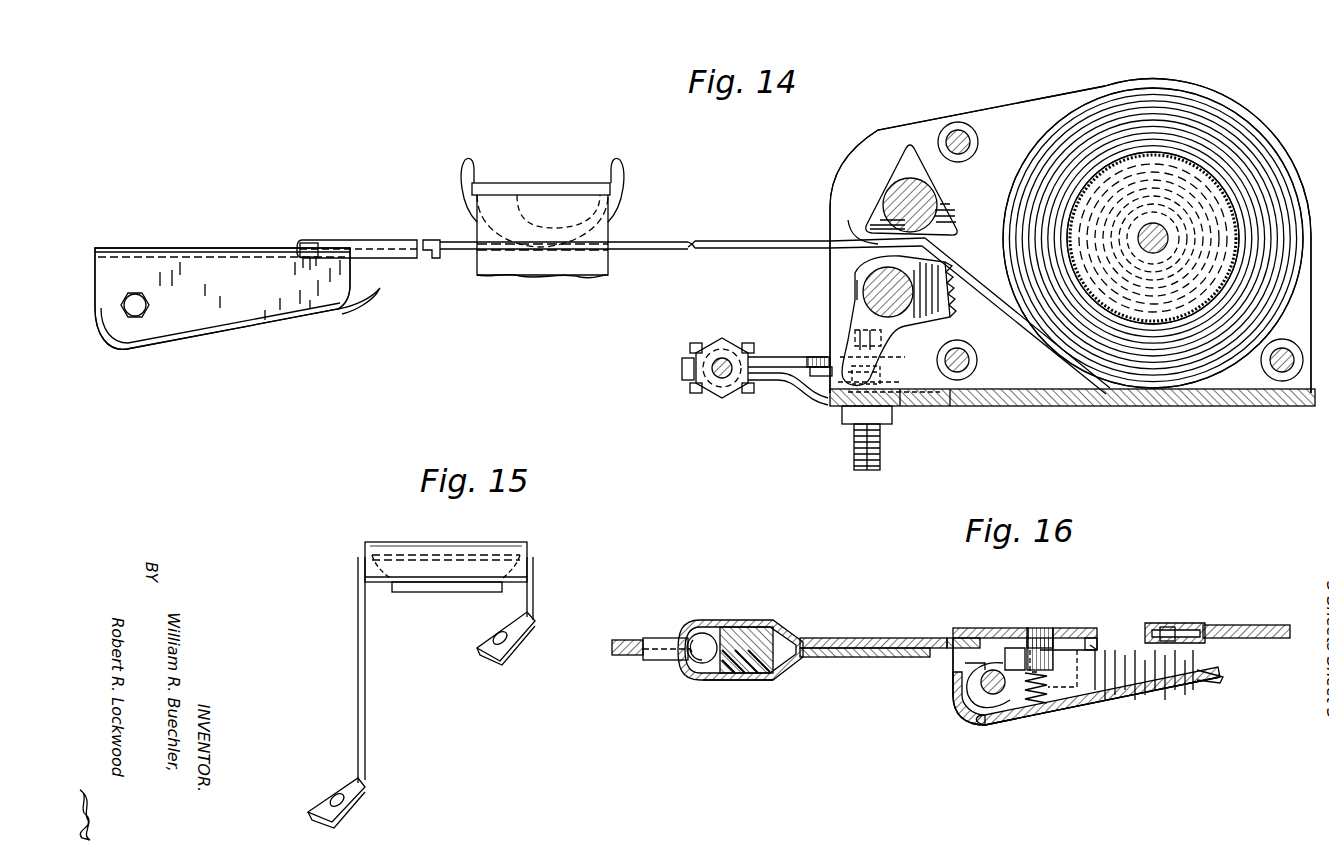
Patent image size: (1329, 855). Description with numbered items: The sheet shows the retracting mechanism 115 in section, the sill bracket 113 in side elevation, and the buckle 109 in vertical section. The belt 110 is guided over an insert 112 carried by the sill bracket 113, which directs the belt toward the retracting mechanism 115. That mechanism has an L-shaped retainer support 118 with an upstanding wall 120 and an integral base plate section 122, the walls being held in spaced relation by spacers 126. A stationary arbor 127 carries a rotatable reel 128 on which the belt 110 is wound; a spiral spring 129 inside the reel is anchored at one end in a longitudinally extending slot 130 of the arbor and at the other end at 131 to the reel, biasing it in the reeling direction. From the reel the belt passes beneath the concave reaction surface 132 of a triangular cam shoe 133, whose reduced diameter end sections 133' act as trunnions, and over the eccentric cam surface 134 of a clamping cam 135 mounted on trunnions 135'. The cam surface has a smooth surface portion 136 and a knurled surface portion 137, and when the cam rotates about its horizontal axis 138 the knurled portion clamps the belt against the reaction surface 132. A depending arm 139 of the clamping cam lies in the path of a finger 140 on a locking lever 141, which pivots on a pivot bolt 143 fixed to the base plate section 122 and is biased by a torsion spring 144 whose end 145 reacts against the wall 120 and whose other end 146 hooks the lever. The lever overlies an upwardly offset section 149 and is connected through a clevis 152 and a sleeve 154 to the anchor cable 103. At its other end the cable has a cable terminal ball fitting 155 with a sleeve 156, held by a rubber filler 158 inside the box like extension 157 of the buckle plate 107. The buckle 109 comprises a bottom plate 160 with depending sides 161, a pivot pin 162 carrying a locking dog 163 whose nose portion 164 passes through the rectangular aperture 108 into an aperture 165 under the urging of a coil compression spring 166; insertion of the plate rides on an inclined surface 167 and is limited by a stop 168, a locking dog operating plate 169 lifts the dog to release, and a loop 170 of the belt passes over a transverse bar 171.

In FIG. 14, the anchor cable 103 is at (721, 380).
In FIG. 16, the anchor cable 103 is at (630, 638).
In FIG. 16, the buckle plate 107 is at (940, 638).
In FIG. 16, the rectangular aperture 108 is at (982, 648).
In FIG. 14, the buckle 109 is at (256, 231).
In FIG. 16, the buckle 109 is at (1156, 604).
In FIG. 14, the belt 110 is at (720, 240).
In FIG. 16, the belt 110 is at (1275, 624).
In FIG. 14, the insert 112 is at (612, 196).
In FIG. 15, the insert 112 is at (518, 550).
In FIG. 14, the sill bracket 113 is at (604, 266).
In FIG. 15, the sill bracket 113 is at (357, 646).
In FIG. 14, the retracting mechanism 115 is at (1250, 57).
In FIG. 14, the retainer support 118 is at (1038, 84).
In FIG. 14, the upstanding wall 120 is at (980, 110).
In FIG. 14, the base plate section 122 is at (1198, 406).
In FIG. 14, the spacers 126 is at (978, 150).
In FIG. 14, the stationary arbor 127 is at (1157, 236).
In FIG. 14, the reel 128 is at (1157, 152).
In FIG. 14, the spiral spring 129 is at (1182, 177).
In FIG. 14, the longitudinally extending slot 130 is at (1123, 237).
In FIG. 14, the anchor point 131 is at (1250, 217).
In FIG. 14, the reaction surface 132 is at (935, 240).
In FIG. 14, the cam shoe 133 is at (928, 190).
In FIG. 14, the reduced diameter end sections 133' is at (891, 195).
In FIG. 14, the eccentric cam surface 134 is at (848, 272).
In FIG. 14, the clamping cam 135 is at (970, 296).
In FIG. 14, the trunnions 135' is at (821, 290).
In FIG. 14, the smooth surface portion 136 is at (855, 220).
In FIG. 14, the knurled surface portion 137 is at (962, 288).
In FIG. 14, the horizontal axis 138 is at (886, 292).
In FIG. 14, the depending arm 139 is at (895, 335).
In FIG. 14, the finger 140 is at (822, 378).
In FIG. 14, the locking lever 141 is at (773, 356).
In FIG. 14, the pivot bolt 143 is at (884, 446).
In FIG. 14, the torsion spring 144 is at (908, 403).
In FIG. 14, the end of torsion spring 145 is at (955, 403).
In FIG. 14, the other end of torsion spring 146 is at (812, 356).
In FIG. 14, the upwardly offset section 149 is at (768, 382).
In FIG. 14, the clevis 152 is at (712, 340).
In FIG. 14, the sleeve 154 is at (706, 370).
In FIG. 16, the cable terminal ball fitting 155 is at (708, 638).
In FIG. 16, the sleeve 156 is at (666, 636).
In FIG. 16, the box like extension 157 is at (752, 620).
In FIG. 16, the rubber filler 158 is at (748, 681).
In FIG. 14, the bottom plate 160 is at (145, 246).
In FIG. 16, the bottom plate 160 is at (1095, 628).
In FIG. 14, the depending sides 161 is at (273, 310).
In FIG. 16, the depending sides 161 is at (1203, 659).
In FIG. 14, the pivot pin 162 is at (136, 318).
In FIG. 16, the pivot pin 162 is at (992, 710).
In FIG. 16, the locking dog 163 is at (1012, 645).
In FIG. 16, the nose portion 164 is at (1040, 636).
In FIG. 16, the aperture 165 is at (1050, 628).
In FIG. 16, the coil compression spring 166 is at (1047, 690).
In FIG. 16, the inclined surface 167 is at (975, 628).
In FIG. 16, the stop 168 is at (1097, 645).
In FIG. 14, the locking dog operating plate 169 is at (197, 338).
In FIG. 16, the locking dog operating plate 169 is at (1140, 690).
In FIG. 14, the loop 170 is at (373, 240).
In FIG. 16, the loop 170 is at (1198, 622).
In FIG. 14, the transverse bar 171 is at (317, 242).
In FIG. 16, the transverse bar 171 is at (1168, 627).